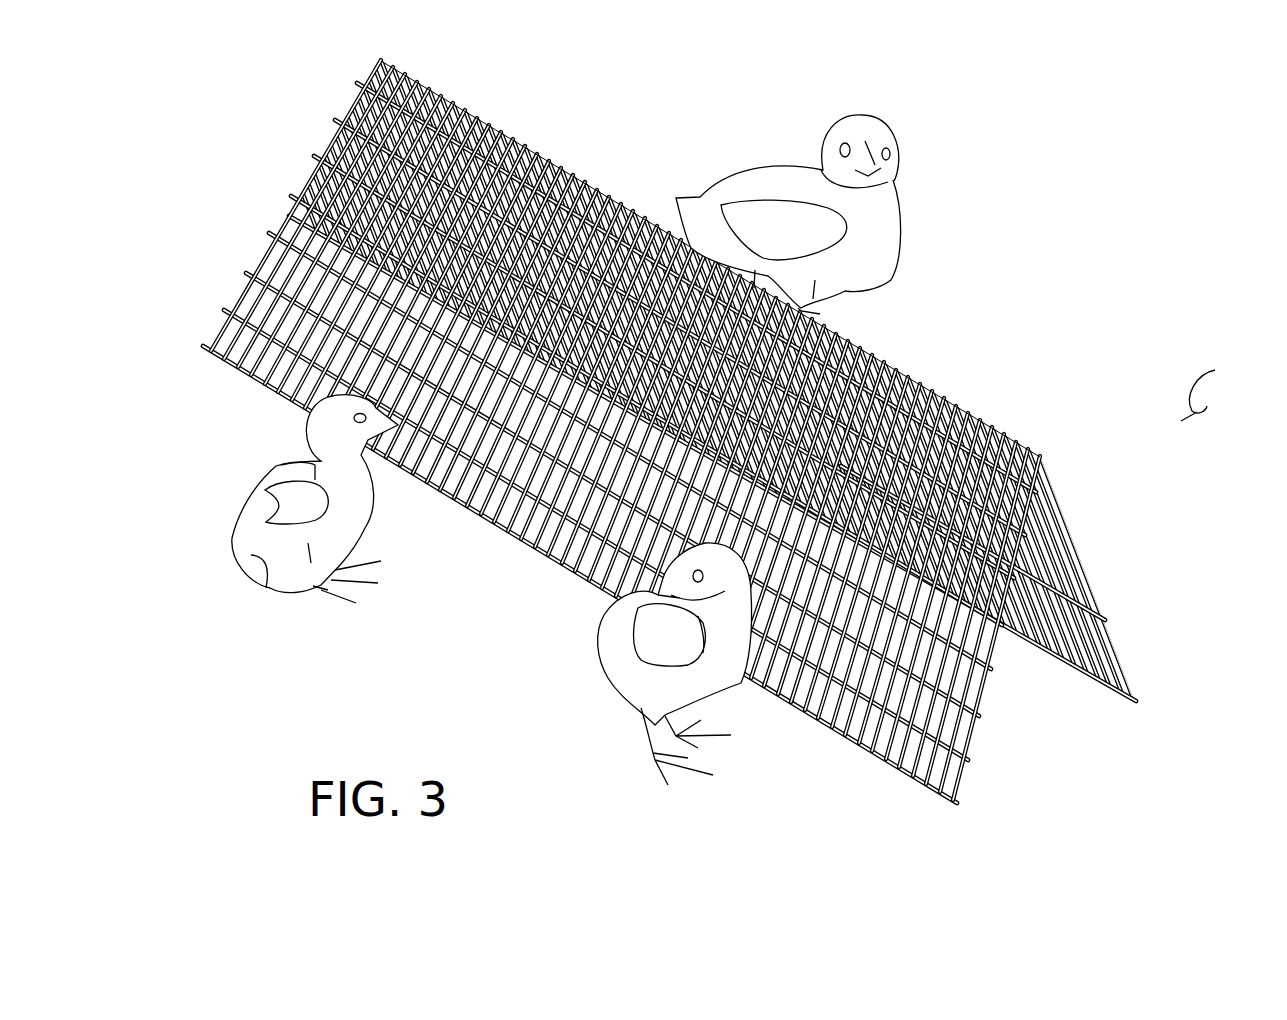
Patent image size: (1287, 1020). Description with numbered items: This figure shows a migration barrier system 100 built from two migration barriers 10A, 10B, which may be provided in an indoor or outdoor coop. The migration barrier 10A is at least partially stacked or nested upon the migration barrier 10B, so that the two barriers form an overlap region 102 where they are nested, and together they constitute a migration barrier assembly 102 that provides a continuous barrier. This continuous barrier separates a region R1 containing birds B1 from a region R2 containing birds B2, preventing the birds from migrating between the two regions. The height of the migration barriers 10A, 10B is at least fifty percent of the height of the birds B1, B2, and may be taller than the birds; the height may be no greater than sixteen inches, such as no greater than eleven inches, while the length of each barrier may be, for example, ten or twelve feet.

The migration barrier system 100 is at (689, 405).
The migration barrier 10A is at (543, 114).
The migration barrier 10B is at (988, 384).
The overlap region 102 is at (643, 168).
The birds B1 is at (240, 548).
The birds B2 is at (883, 233).
The region R1 is at (492, 670).
The region R2 is at (1218, 389).